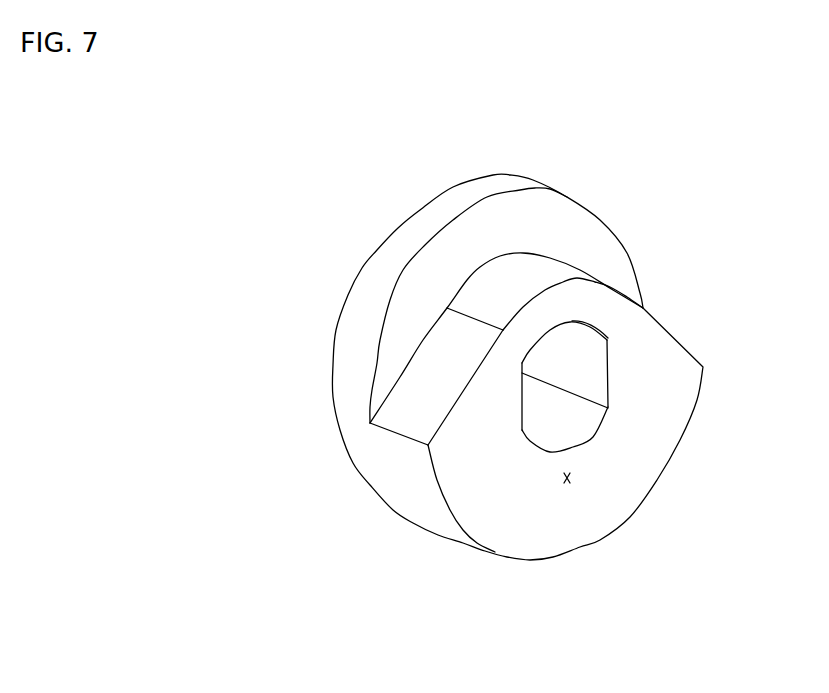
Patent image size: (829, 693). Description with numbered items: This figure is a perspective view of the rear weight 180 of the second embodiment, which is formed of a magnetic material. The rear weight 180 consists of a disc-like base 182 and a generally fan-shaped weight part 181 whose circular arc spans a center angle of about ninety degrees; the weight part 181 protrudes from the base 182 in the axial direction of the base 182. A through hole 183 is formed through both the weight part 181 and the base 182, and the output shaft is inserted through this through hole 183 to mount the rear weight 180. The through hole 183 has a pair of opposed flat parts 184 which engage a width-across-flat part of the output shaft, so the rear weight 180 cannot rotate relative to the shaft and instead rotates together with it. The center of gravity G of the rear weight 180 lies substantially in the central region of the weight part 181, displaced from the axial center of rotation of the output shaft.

The rear weight 180 is at (693, 495).
The weight part 181 is at (495, 508).
The base 182 is at (415, 303).
The through hole 183 is at (590, 442).
The flat parts 184 is at (522, 398).
The center of gravity G is at (567, 480).